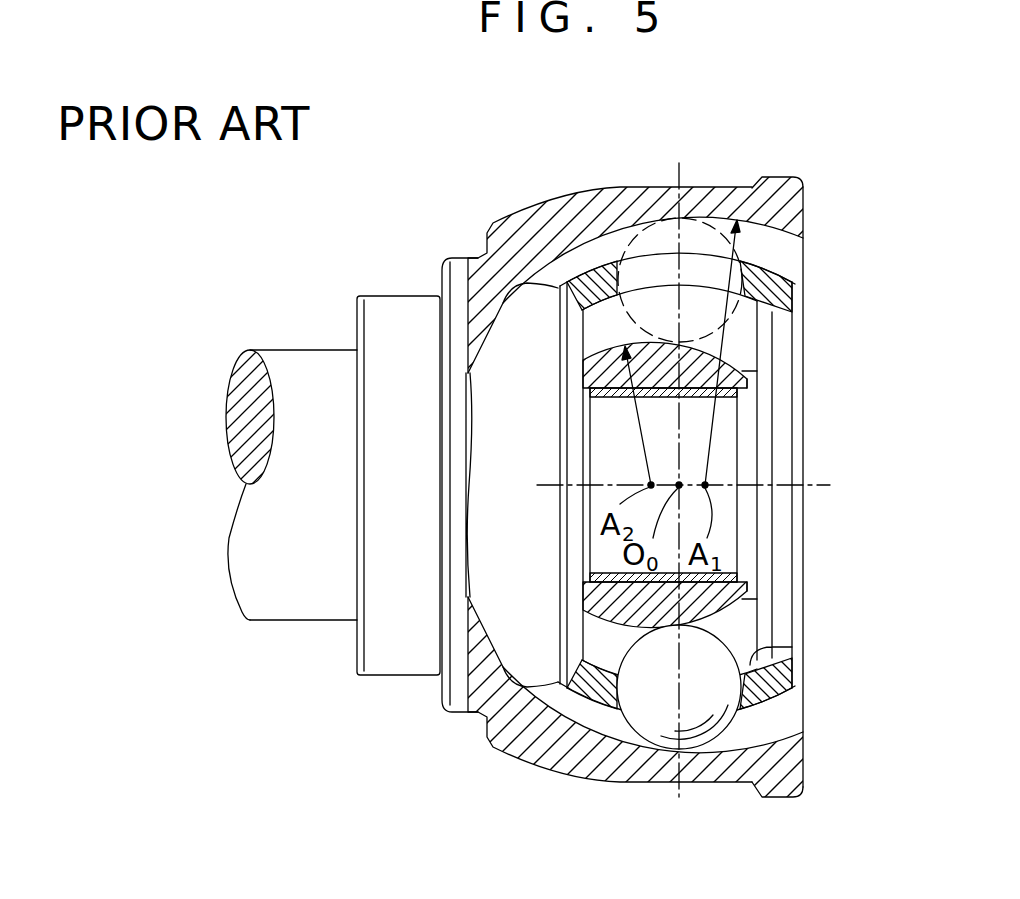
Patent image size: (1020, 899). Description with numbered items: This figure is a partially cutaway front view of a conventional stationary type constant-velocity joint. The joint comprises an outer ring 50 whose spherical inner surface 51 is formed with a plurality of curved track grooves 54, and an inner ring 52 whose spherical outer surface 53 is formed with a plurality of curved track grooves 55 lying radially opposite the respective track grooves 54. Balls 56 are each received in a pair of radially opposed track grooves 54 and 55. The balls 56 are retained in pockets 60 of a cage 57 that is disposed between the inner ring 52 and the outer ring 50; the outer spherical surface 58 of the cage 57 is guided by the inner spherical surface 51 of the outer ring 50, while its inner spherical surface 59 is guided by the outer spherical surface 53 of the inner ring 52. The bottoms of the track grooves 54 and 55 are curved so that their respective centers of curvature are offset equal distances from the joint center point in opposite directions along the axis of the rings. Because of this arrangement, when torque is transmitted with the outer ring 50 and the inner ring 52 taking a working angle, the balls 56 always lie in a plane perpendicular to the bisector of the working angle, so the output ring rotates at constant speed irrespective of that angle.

The outer ring 50 is at (530, 217).
The spherical inner surface 51 is at (792, 288).
The inner ring 52 is at (730, 590).
The spherical outer surface 53 is at (558, 765).
The track grooves 54 is at (753, 233).
The track grooves 55 is at (750, 343).
The balls 56 is at (663, 730).
The cage 57 is at (783, 673).
The outer spherical surface 58 is at (777, 683).
The inner spherical surface 59 is at (757, 647).
The pockets 60 is at (615, 773).